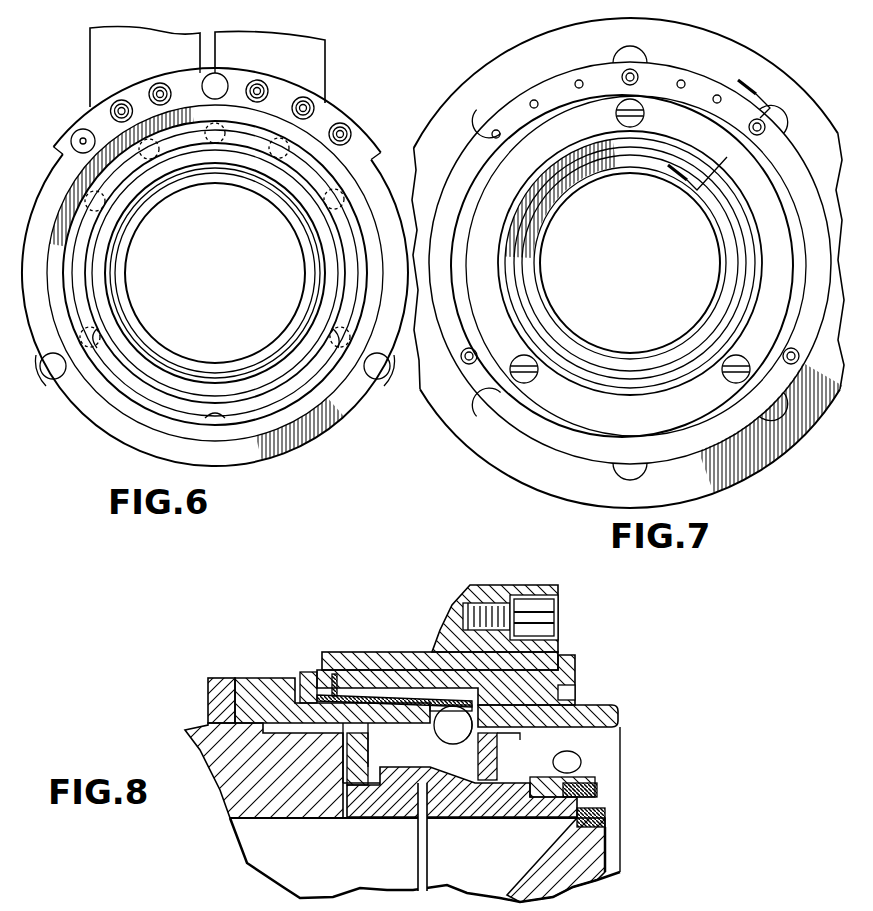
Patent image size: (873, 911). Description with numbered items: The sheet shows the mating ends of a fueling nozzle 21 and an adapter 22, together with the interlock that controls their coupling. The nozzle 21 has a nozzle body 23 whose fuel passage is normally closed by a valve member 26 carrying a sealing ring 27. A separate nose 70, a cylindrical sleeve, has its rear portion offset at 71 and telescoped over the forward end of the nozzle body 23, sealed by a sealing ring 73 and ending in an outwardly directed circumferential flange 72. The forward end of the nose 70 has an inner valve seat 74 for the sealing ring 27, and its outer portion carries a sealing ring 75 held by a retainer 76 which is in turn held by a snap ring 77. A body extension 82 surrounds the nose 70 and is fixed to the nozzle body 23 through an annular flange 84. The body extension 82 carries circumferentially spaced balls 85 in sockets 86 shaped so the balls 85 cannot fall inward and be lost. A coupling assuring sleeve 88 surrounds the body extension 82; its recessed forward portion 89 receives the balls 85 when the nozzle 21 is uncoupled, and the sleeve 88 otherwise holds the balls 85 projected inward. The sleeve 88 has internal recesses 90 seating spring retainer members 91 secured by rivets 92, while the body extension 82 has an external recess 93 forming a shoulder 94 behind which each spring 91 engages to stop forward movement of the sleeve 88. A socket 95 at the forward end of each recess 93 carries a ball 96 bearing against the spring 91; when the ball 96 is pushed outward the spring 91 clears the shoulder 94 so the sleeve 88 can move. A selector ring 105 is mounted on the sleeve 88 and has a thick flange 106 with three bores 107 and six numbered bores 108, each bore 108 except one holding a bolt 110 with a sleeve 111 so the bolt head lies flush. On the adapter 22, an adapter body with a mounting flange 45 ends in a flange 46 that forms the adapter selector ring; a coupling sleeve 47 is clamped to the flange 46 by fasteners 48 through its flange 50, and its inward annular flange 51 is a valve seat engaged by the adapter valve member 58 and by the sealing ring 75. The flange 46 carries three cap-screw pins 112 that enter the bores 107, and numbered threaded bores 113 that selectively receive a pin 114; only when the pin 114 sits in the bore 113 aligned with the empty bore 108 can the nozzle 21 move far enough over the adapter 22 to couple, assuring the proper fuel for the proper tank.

In FIG. 6, the nozzle 21 is at (40, 183).
In FIG. 7, the adapter 22 is at (770, 56).
In FIG. 6, the nozzle body 23 is at (326, 48).
In FIG. 8, the nozzle body 23 is at (204, 752).
In FIG. 6, the valve member 26 is at (254, 306).
In FIG. 8, the valve member 26 is at (600, 855).
In FIG. 8, the sealing ring 27 is at (606, 813).
In FIG. 7, the flange 45 is at (783, 452).
In FIG. 7, the flange 46 is at (717, 447).
In FIG. 7, the coupling sleeve 47 is at (659, 390).
In FIG. 7, the fasteners 48 is at (613, 108).
In FIG. 7, the flange 50 is at (610, 424).
In FIG. 7, the annular flange 51 is at (572, 357).
In FIG. 7, the valve member 58 is at (615, 341).
In FIG. 6, the nose 70 is at (130, 243).
In FIG. 8, the nose 70 is at (460, 824).
In FIG. 8, the offset 71 is at (414, 768).
In FIG. 8, the circumferential flange 72 is at (345, 776).
In FIG. 8, the sealing ring 73 is at (385, 796).
In FIG. 8, the inner valve seat 74 is at (606, 827).
In FIG. 6, the sealing ring 75 is at (124, 300).
In FIG. 8, the sealing ring 75 is at (600, 791).
In FIG. 8, the retainer 76 is at (596, 776).
In FIG. 8, the snap ring 77 is at (543, 777).
In FIG. 6, the body extension 82 is at (128, 378).
In FIG. 8, the body extension 82 is at (600, 700).
In FIG. 8, the annular flange 84 is at (221, 678).
In FIG. 6, the balls 85 is at (277, 160).
In FIG. 8, the balls 85 is at (562, 764).
In FIG. 8, the sockets 86 is at (579, 758).
In FIG. 6, the coupling assuring sleeve 88 is at (280, 421).
In FIG. 8, the coupling assuring sleeve 88 is at (578, 652).
In FIG. 8, the recessed forward portion 89 is at (572, 694).
In FIG. 8, the internal recesses 90 is at (412, 697).
In FIG. 8, the spring retainer members 91 is at (446, 705).
In FIG. 8, the rivets 92 is at (330, 686).
In FIG. 8, the external recess 93 is at (368, 738).
In FIG. 8, the shoulder 94 is at (513, 727).
In FIG. 8, the socket 95 is at (490, 730).
In FIG. 6, the ball 96 is at (241, 147).
In FIG. 8, the ball 96 is at (448, 746).
In FIG. 6, the selector ring 105 is at (358, 162).
In FIG. 8, the selector ring 105 is at (348, 658).
In FIG. 6, the flange 106 is at (324, 420).
In FIG. 8, the flange 106 is at (480, 592).
In FIG. 6, the bores 107 is at (206, 66).
In FIG. 6, the bores 108 is at (110, 104).
In FIG. 8, the bores 108 is at (540, 585).
In FIG. 6, the bolt 110 is at (152, 88).
In FIG. 8, the bolt 110 is at (548, 608).
In FIG. 8, the sleeve 111 is at (497, 592).
In FIG. 7, the pins 112 is at (633, 76).
In FIG. 7, the threaded bores 113 is at (578, 80).
In FIG. 7, the pin 114 is at (764, 130).